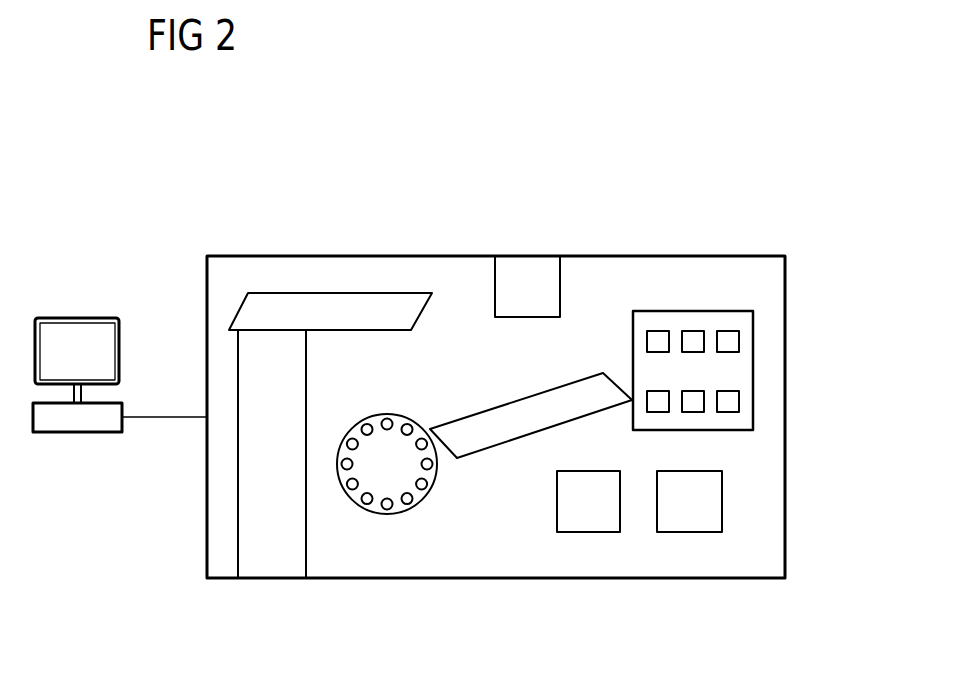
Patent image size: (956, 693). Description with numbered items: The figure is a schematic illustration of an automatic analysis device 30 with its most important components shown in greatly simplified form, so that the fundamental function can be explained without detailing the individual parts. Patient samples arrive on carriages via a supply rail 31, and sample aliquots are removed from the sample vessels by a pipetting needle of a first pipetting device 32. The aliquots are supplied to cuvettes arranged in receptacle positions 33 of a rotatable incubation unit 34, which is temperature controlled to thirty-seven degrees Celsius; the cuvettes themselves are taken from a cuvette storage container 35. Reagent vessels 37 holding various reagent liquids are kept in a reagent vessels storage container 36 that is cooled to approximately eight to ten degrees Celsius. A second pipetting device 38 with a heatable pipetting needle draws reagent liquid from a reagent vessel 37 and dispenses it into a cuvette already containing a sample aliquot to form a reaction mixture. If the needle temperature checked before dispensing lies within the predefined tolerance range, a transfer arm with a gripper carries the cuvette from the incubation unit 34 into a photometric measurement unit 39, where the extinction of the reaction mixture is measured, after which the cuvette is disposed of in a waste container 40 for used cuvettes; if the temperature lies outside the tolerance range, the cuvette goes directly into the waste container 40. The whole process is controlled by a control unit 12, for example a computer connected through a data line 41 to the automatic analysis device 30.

The control unit 12 is at (76, 318).
The automatic analysis device 30 is at (757, 607).
The supply rail 31 is at (238, 523).
The first pipetting device 32 is at (339, 290).
The receptacle positions 33 is at (415, 502).
The rotatable incubation unit 34 is at (385, 514).
The cuvette storage container 35 is at (528, 256).
The reagent vessels storage container 36 is at (738, 318).
The reagent vessel 37 is at (739, 338).
The second pipetting device 38 is at (525, 399).
The photometric measurement unit 39 is at (590, 532).
The waste container 40 is at (695, 532).
The data line 41 is at (157, 417).